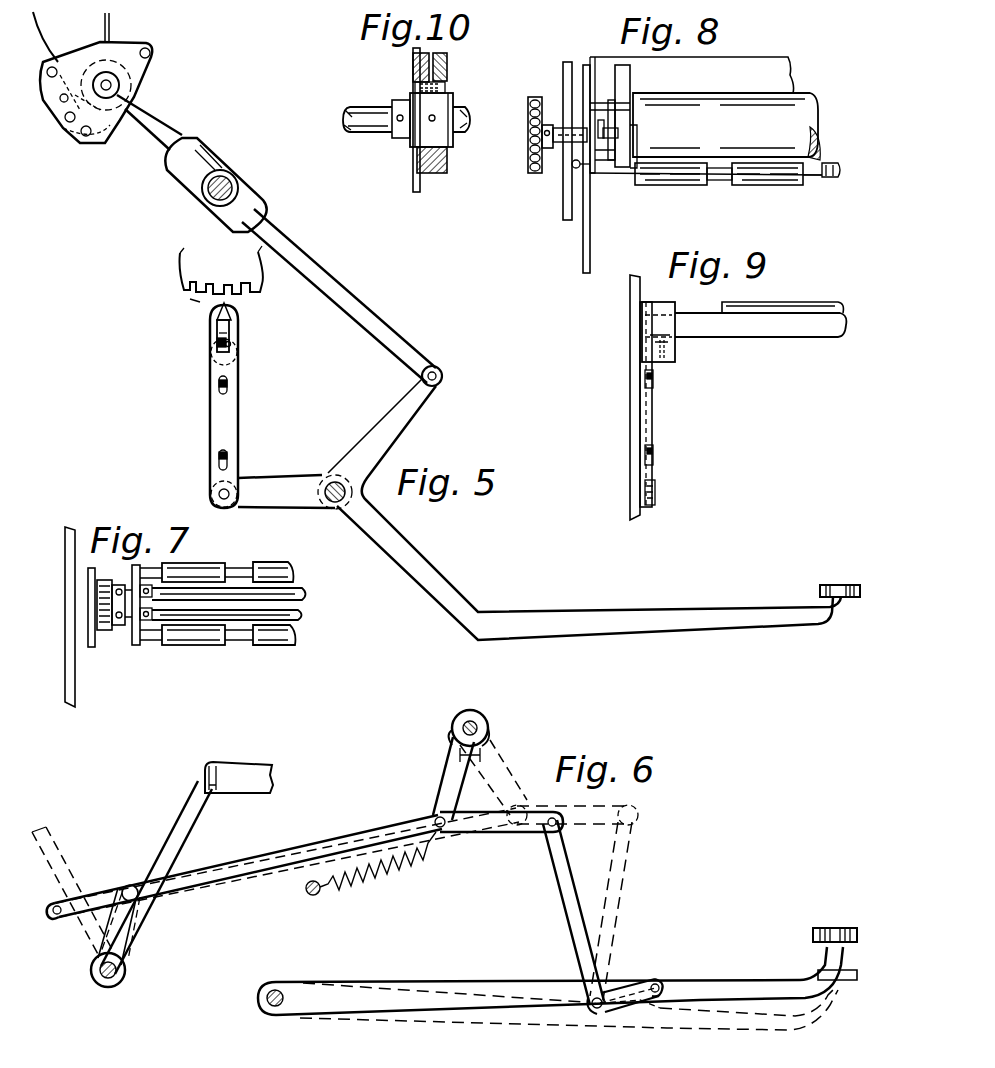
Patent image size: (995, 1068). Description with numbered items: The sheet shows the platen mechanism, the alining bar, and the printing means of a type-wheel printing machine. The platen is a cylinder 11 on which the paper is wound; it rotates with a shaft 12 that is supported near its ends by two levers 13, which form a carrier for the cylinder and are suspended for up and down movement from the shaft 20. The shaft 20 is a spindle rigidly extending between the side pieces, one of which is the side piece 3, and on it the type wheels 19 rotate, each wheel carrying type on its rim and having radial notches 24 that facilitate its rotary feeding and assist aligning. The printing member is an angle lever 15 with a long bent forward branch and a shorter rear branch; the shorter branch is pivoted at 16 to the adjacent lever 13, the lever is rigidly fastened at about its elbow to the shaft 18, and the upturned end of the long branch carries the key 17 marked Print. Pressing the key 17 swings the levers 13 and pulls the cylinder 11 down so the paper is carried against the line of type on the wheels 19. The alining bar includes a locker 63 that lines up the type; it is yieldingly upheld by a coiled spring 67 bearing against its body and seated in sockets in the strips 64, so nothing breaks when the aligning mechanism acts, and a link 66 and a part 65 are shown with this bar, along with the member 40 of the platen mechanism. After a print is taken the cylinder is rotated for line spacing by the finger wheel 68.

In FIG. 9, the side piece 3 is at (632, 492).
In FIG. 8, the cylinder 11 is at (812, 117).
In FIG. 5, the shaft 12 is at (115, 83).
In FIG. 5, the lever 13 is at (168, 132).
In FIG. 5, the printing lever 15 is at (545, 622).
In FIG. 5, the pivot 16 is at (443, 376).
In FIG. 5, the key 17 is at (834, 583).
In FIG. 5, the shaft 18 is at (333, 504).
In FIG. 5, the type wheel 19 is at (250, 264).
In FIG. 5, the shaft 20 is at (206, 197).
In FIG. 5, the notch 24 is at (193, 298).
In FIG. 8, the lever 40 is at (622, 176).
In FIG. 5, the locker 63 is at (216, 328).
In FIG. 9, the locker 63 is at (743, 330).
In FIG. 5, the strip 64 is at (232, 425).
In FIG. 9, the strip 64 is at (650, 416).
In FIG. 5, the slot 65 is at (218, 458).
In FIG. 9, the slot 65 is at (655, 454).
In FIG. 5, the link 66 is at (272, 492).
In FIG. 5, the spring 67 is at (228, 350).
In FIG. 8, the finger wheel 68 is at (537, 175).